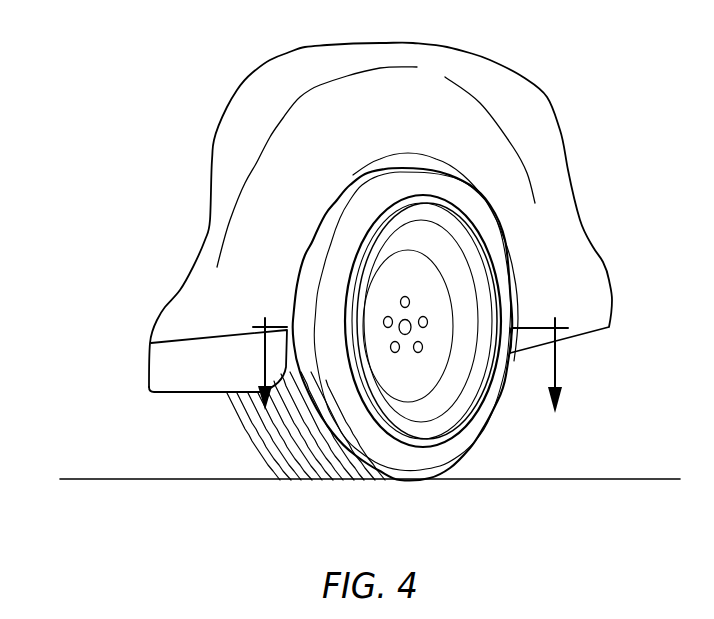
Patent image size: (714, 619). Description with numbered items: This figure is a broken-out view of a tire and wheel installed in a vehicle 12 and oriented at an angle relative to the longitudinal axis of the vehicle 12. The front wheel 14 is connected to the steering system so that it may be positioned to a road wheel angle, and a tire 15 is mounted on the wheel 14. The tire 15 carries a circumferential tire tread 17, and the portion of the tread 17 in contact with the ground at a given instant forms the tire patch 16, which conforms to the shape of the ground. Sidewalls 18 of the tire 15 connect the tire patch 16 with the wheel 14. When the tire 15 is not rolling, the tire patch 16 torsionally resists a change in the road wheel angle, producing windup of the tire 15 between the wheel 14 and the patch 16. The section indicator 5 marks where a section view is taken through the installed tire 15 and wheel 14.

The vehicle 12 is at (587, 340).
The front wheel 14 is at (353, 260).
The tire 15 is at (489, 450).
The tire patch 16 is at (122, 480).
The circumferential tire tread 17 is at (237, 420).
The sidewall 18 is at (483, 219).
The section line indicator 5 is at (410, 345).